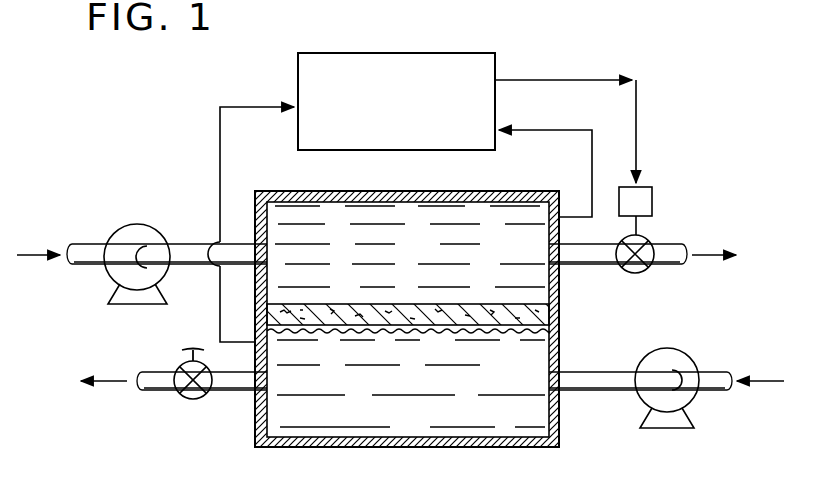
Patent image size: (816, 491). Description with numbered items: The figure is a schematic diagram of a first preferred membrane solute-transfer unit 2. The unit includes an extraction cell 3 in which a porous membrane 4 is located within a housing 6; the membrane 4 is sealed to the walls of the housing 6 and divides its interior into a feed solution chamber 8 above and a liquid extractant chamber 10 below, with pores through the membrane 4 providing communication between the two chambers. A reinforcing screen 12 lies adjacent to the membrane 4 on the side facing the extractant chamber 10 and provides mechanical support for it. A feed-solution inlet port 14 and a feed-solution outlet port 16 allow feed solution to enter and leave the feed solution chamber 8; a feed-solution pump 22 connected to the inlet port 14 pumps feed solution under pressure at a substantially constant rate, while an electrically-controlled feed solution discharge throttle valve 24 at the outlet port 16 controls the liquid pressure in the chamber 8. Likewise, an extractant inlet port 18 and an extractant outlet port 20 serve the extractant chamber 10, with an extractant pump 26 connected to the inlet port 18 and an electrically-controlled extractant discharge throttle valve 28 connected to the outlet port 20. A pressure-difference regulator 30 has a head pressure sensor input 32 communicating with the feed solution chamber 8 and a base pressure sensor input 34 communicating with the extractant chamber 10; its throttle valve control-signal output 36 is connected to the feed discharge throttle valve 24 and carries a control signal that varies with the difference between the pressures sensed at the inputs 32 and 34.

The membrane solute-transfer unit 2 is at (684, 141).
The extraction cell 3 is at (576, 338).
The porous membrane 4 is at (383, 306).
The housing 6 is at (524, 192).
The feed solution chamber 8 is at (421, 259).
The liquid extractant chamber 10 is at (427, 422).
The reinforcing screen 12 is at (421, 333).
The feed-solution inlet port 14 is at (268, 255).
The feed-solution outlet port 16 is at (549, 256).
The extractant inlet port 18 is at (549, 382).
The extractant outlet port 20 is at (268, 382).
The feed-solution pump 22 is at (143, 224).
The feed solution discharge throttle valve 24 is at (649, 244).
The extractant pump 26 is at (672, 348).
The extractant discharge throttle valve 28 is at (180, 366).
The pressure-difference regulator 30 is at (498, 52).
The head pressure sensor input 32 is at (498, 128).
The base pressure sensor input 34 is at (278, 104).
The throttle valve control-signal output 36 is at (498, 80).